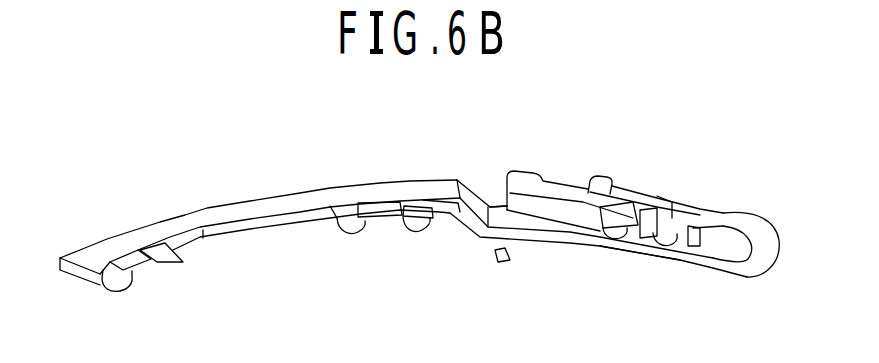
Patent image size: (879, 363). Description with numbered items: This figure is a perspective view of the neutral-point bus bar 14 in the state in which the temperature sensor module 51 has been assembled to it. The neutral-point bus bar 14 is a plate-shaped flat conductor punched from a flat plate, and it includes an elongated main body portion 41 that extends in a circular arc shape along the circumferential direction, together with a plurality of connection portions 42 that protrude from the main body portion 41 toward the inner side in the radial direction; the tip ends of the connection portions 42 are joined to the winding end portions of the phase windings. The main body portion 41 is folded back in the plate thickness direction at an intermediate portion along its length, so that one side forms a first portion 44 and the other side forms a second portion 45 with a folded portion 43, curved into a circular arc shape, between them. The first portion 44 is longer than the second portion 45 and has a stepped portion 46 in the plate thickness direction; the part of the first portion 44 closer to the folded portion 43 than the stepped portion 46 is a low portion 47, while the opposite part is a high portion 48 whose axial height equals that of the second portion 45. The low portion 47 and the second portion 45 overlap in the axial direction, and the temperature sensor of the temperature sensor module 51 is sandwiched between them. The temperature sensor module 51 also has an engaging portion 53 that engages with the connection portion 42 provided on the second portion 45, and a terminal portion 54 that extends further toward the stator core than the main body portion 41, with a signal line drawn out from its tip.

The neutral-point bus bar 14 is at (652, 141).
The main body portion 41 is at (312, 190).
The connection portion 42 is at (165, 288).
The folded portion 43 is at (771, 223).
The first portion 44 is at (590, 243).
The second portion 45 is at (698, 210).
The stepped portion 46 is at (475, 195).
The low portion 47 is at (557, 247).
The high portion 48 is at (217, 245).
The temperature sensor module 51 is at (557, 182).
The engaging portion 53 is at (645, 195).
The terminal portion 54 is at (510, 250).